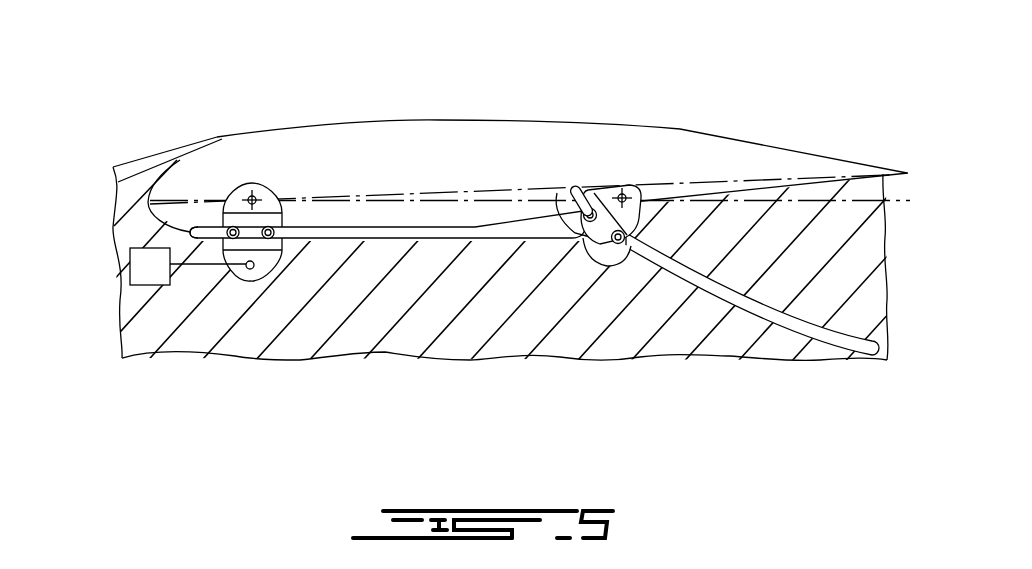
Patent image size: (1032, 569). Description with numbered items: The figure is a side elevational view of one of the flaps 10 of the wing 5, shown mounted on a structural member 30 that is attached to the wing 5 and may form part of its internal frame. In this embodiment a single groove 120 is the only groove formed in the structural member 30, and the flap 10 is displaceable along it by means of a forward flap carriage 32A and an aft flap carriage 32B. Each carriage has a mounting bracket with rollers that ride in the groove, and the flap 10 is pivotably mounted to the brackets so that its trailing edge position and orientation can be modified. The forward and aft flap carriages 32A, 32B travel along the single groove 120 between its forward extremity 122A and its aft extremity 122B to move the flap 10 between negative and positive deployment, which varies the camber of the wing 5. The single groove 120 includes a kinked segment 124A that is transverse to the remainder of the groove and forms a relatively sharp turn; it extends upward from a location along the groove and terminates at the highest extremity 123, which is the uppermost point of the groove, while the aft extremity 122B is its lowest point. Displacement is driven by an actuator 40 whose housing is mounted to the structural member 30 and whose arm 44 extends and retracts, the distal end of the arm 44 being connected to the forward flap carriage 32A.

The wing 5 is at (130, 152).
The flap 10 is at (418, 100).
The structural member 30 is at (492, 333).
The forward flap carriage 32A is at (228, 190).
The aft flap carriage 32B is at (637, 180).
The actuator 40 is at (134, 289).
The arm 44 is at (212, 266).
The single groove 120 is at (352, 224).
The forward extremity 122A is at (190, 232).
The aft extremity 122B is at (868, 352).
The highest extremity 123 is at (575, 186).
The kinked segment 124A is at (555, 228).